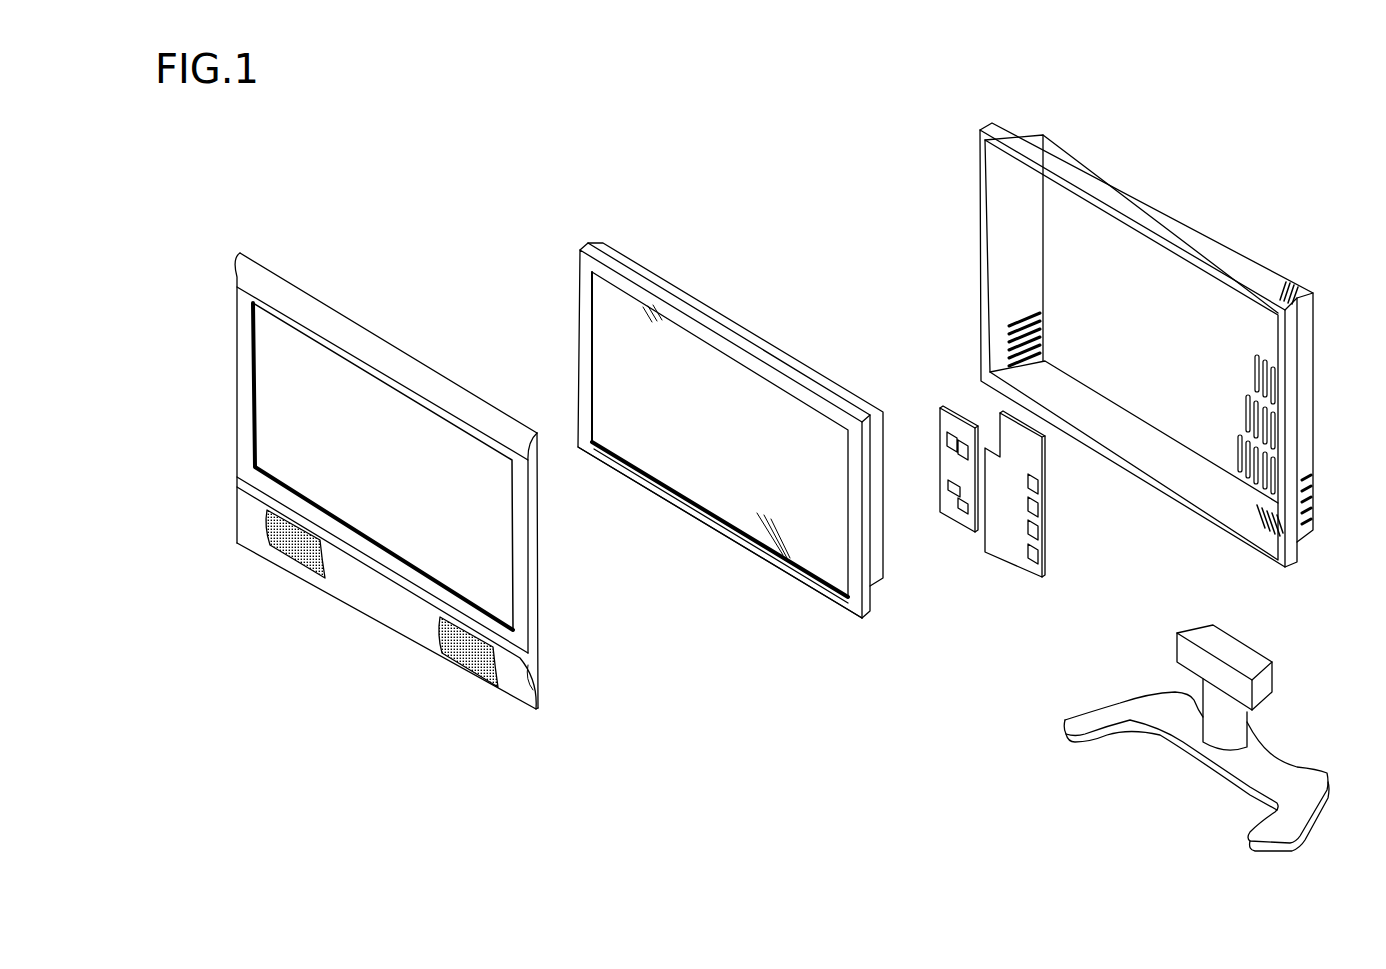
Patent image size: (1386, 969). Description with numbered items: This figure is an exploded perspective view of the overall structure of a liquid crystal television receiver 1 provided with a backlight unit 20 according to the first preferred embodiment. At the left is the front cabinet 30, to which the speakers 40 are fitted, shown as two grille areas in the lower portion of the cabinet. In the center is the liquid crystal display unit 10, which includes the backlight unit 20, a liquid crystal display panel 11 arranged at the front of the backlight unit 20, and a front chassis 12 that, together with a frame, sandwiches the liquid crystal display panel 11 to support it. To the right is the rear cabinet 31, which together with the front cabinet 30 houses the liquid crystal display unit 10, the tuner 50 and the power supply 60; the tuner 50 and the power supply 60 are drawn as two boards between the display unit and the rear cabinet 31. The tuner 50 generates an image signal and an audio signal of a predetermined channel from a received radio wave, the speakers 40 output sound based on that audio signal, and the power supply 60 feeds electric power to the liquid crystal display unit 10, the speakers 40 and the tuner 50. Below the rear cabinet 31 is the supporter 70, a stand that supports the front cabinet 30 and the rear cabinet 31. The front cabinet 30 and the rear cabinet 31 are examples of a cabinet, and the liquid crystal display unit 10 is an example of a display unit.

The liquid crystal television receiver 1 is at (313, 148).
The liquid crystal display unit 10 is at (730, 434).
The liquid crystal display panel 11 is at (667, 472).
The front chassis 12 is at (777, 563).
The backlight unit 20 is at (792, 360).
The front cabinet 30 is at (370, 347).
The rear cabinet 31 is at (1157, 207).
The speakers 40 is at (282, 550).
The tuner 50 is at (952, 512).
The power supply 60 is at (1007, 552).
The supporter 70 is at (1178, 728).